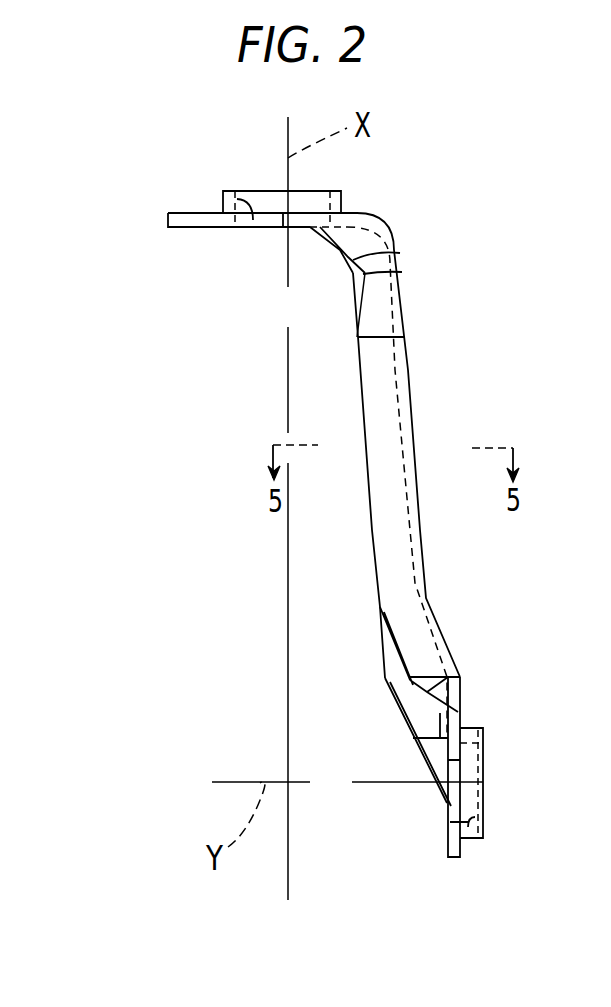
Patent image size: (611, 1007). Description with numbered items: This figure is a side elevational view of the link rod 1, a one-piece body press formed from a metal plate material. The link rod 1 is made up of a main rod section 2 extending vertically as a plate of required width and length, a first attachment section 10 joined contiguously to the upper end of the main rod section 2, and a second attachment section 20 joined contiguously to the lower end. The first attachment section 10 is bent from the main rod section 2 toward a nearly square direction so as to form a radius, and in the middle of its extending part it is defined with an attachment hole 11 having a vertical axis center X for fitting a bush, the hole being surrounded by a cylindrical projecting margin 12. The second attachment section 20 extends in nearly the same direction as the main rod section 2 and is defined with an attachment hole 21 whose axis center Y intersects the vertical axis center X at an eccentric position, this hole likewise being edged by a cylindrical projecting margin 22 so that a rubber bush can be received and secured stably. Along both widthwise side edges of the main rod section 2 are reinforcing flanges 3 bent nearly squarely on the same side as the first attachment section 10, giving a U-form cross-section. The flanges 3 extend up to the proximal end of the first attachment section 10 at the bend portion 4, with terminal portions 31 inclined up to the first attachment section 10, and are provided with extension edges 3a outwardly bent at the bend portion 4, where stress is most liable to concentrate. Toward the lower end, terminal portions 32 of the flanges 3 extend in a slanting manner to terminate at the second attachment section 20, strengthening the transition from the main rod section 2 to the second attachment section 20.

The link rod 1 is at (458, 148).
The main rod section 2 is at (422, 548).
The reinforcing flange 3 is at (401, 460).
The extension edge 3a is at (400, 253).
The bend portion 4 is at (390, 233).
The first attachment section 10 is at (187, 228).
The attachment hole 11 is at (253, 227).
The cylindrical projecting margin 12 is at (270, 200).
The second attachment section 20 is at (445, 817).
The attachment hole 21 is at (483, 812).
The cylindrical projecting margin 22 is at (483, 782).
The terminal portion 31 is at (315, 232).
The terminal portion 32 is at (450, 670).